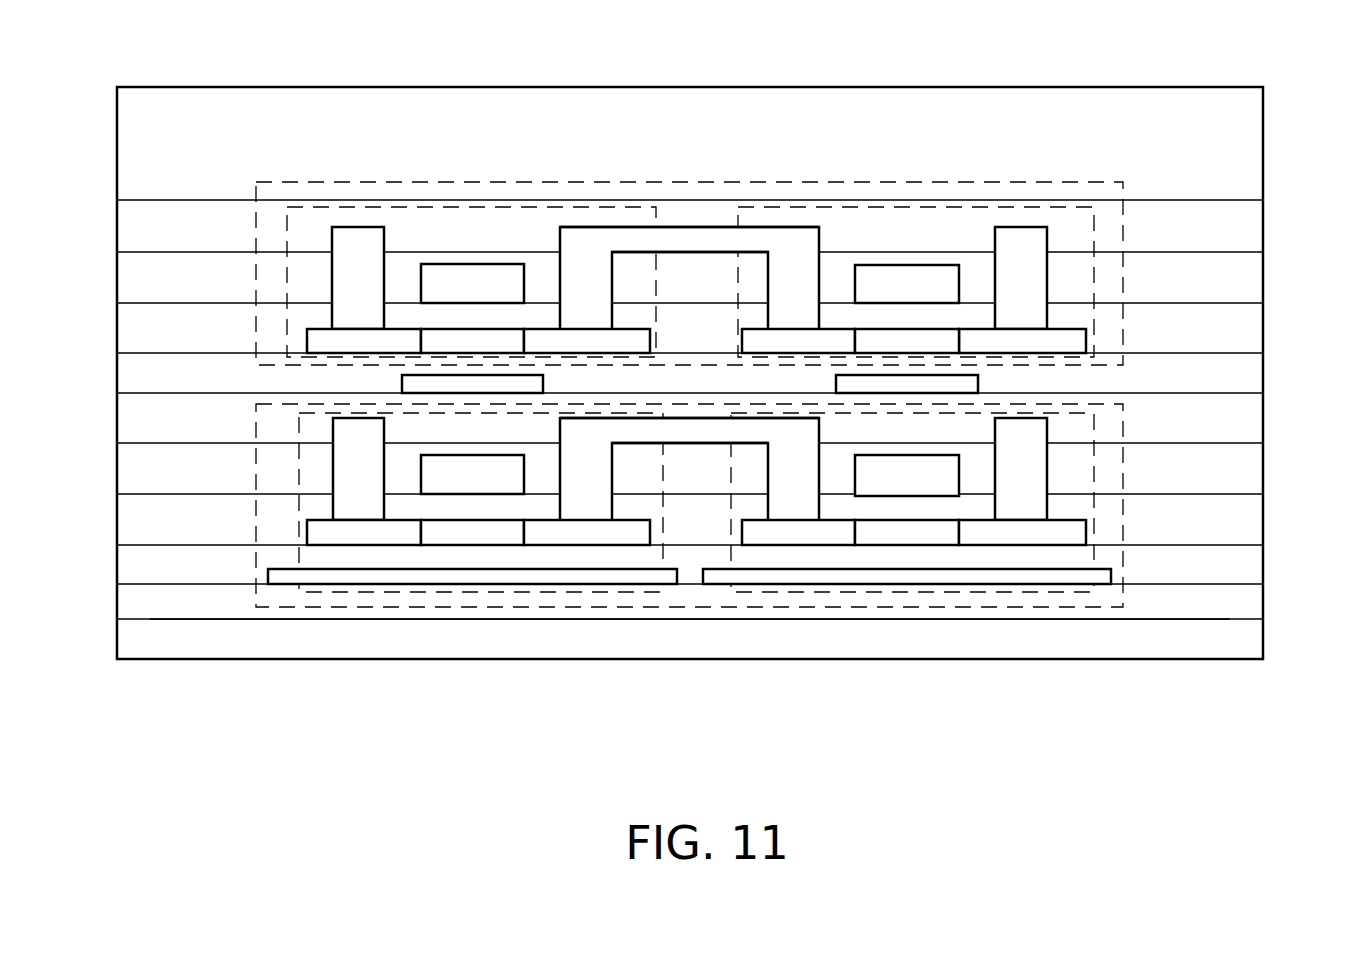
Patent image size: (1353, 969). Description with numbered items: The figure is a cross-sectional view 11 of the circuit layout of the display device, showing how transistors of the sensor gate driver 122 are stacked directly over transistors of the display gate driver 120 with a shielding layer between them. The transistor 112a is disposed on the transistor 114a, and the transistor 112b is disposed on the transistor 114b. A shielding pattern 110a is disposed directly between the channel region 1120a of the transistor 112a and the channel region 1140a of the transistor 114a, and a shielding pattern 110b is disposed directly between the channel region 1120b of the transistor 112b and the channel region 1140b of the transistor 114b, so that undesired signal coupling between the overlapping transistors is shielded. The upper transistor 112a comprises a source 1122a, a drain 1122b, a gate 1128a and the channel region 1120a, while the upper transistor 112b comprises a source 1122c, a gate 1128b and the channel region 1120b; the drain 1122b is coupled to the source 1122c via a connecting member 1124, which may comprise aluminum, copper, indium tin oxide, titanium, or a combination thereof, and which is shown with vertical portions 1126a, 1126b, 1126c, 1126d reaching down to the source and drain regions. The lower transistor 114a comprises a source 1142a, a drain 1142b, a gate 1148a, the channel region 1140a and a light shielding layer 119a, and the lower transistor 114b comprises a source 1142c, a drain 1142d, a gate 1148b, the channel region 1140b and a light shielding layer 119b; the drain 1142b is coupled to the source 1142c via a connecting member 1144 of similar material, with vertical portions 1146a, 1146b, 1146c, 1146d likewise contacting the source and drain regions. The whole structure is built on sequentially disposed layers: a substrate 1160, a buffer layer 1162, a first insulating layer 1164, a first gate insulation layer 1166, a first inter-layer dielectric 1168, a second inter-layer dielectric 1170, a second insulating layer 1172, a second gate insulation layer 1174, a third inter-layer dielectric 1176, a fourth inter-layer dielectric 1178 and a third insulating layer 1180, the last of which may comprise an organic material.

The cross-sectional view 11 is at (1107, 87).
The sensor gate driver 122 is at (1112, 182).
The display gate driver 120 is at (1123, 408).
The transistor 112a is at (287, 282).
The transistor 112b is at (1094, 229).
The transistor 114a is at (299, 474).
The transistor 114b is at (1094, 475).
The shielding pattern 110a is at (407, 382).
The shielding pattern 110b is at (975, 383).
The light shielding layer 119a is at (288, 577).
The light shielding layer 119b is at (1103, 577).
The channel region 1120a is at (435, 335).
The channel region 1120b is at (870, 335).
The source 1122a is at (307, 340).
The drain 1122b is at (635, 343).
The source 1122c is at (758, 338).
The connecting member 1124 is at (689, 242).
The contact via 1126a is at (362, 237).
The contact via 1126b is at (583, 237).
The contact via 1126c is at (796, 237).
The contact via 1126d is at (1016, 237).
The gate 1128a is at (438, 297).
The gate 1128b is at (873, 297).
The channel region 1140a is at (467, 534).
The channel region 1140b is at (903, 535).
The source 1142a is at (334, 535).
The drain 1142b is at (612, 535).
The source 1142c is at (770, 535).
The drain 1142d is at (1069, 535).
The connecting member 1144 is at (683, 433).
The contact via 1146a is at (361, 495).
The contact via 1146b is at (583, 495).
The contact via 1146c is at (801, 495).
The contact via 1146d is at (1027, 497).
The gate 1148a is at (438, 488).
The gate 1148b is at (873, 488).
The substrate 1160 is at (1247, 641).
The buffer layer 1162 is at (1247, 604).
The first insulating layer 1164 is at (1247, 565).
The first gate insulation layer 1166 is at (1247, 523).
The first inter-layer dielectric 1168 is at (1247, 474).
The second inter-layer dielectric 1170 is at (1247, 414).
The second insulating layer 1172 is at (1247, 374).
The second gate insulation layer 1174 is at (1247, 333).
The third inter-layer dielectric 1176 is at (1247, 283).
The fourth inter-layer dielectric 1178 is at (1247, 232).
The third insulating layer 1180 is at (1247, 155).